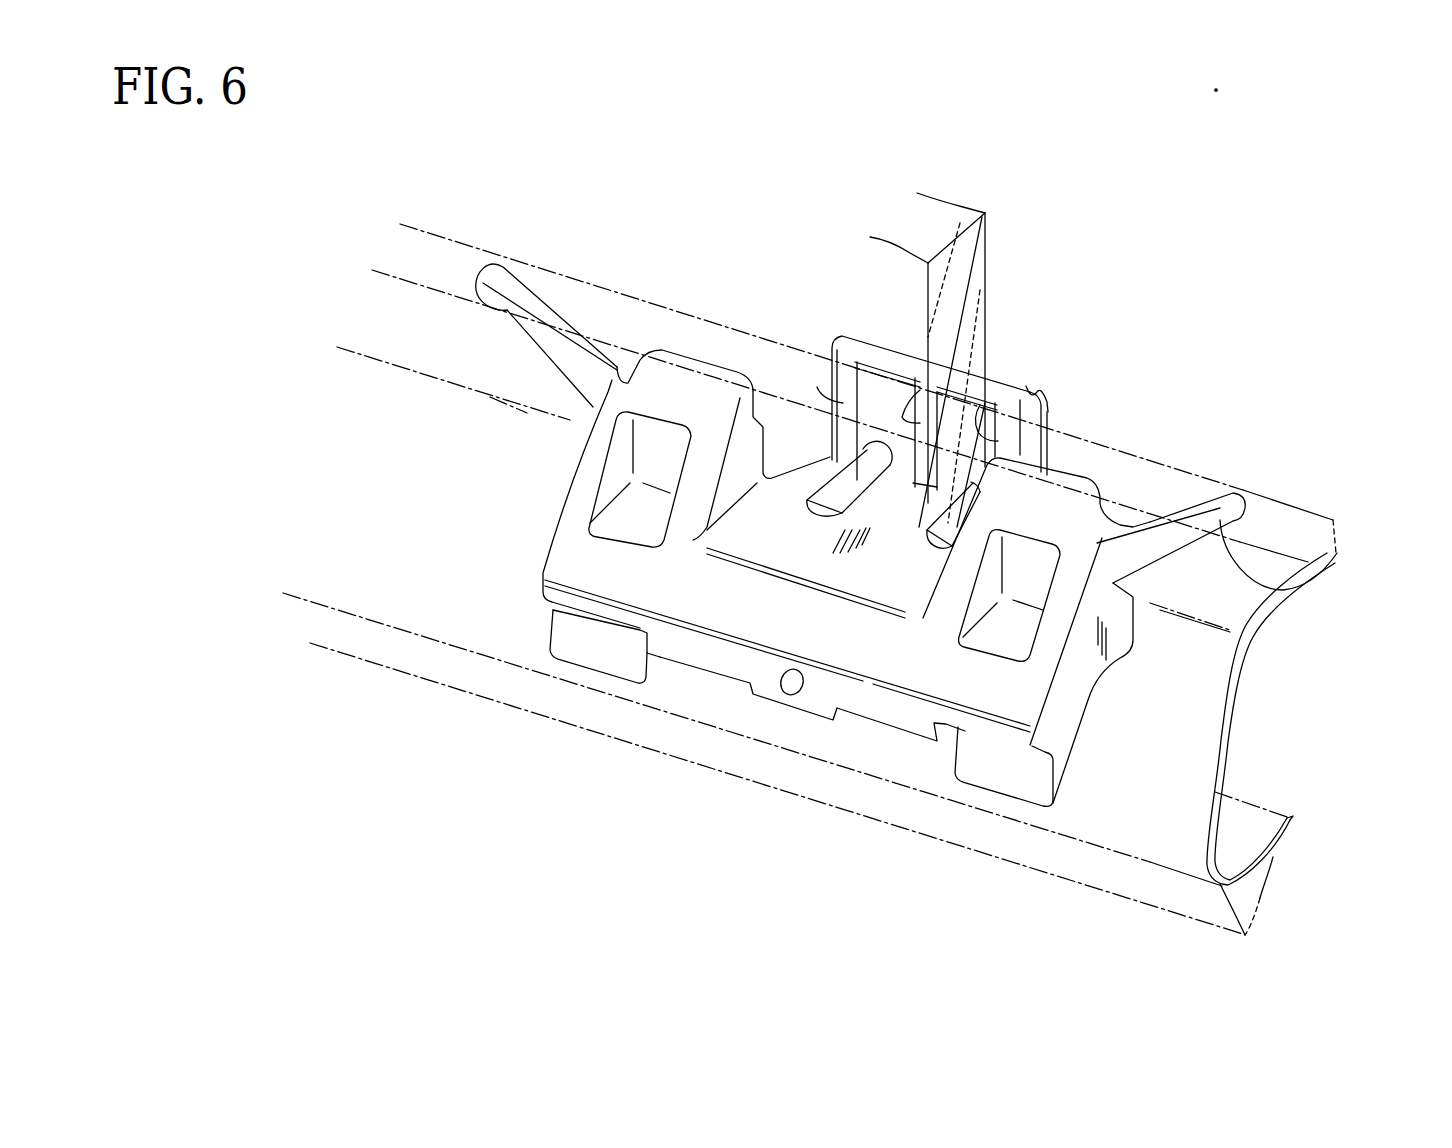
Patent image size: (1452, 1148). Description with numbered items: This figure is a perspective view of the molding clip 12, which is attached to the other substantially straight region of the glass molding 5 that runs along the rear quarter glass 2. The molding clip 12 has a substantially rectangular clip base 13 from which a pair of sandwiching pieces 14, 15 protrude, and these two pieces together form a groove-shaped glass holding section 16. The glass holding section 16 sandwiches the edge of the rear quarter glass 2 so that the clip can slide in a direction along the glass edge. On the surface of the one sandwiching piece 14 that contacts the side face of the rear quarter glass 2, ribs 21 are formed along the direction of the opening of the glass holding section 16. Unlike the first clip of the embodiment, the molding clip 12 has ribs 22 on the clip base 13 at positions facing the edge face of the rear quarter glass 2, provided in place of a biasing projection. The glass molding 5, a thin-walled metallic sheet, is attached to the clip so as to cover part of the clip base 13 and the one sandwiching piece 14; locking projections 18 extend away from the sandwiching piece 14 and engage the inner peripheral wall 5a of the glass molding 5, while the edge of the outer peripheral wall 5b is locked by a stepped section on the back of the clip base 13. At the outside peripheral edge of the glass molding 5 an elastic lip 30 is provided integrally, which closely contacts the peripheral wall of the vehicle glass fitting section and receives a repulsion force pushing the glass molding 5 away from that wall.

The rear quarter glass 2 is at (987, 280).
The glass molding 5 is at (1240, 737).
The inner peripheral wall of the glass molding 5a is at (1267, 607).
The outer peripheral wall of the glass molding 5b is at (1277, 857).
The molding clip 12 is at (950, 519).
The clip base 13 is at (872, 716).
The sandwiching piece 14 is at (697, 386).
The sandwiching piece 15 is at (1053, 403).
The glass holding section 16 is at (803, 457).
The locking projections 18 is at (535, 298).
The ribs 21 is at (907, 430).
The ribs 22 is at (925, 540).
The elastic lip 30 is at (1018, 866).